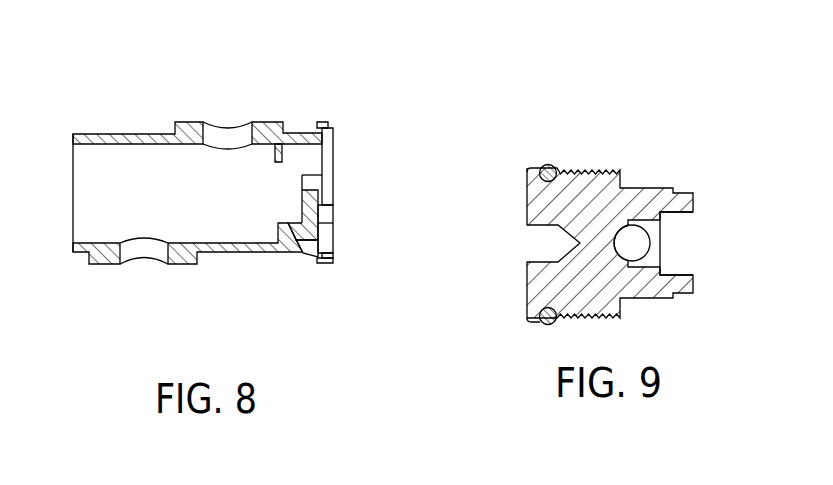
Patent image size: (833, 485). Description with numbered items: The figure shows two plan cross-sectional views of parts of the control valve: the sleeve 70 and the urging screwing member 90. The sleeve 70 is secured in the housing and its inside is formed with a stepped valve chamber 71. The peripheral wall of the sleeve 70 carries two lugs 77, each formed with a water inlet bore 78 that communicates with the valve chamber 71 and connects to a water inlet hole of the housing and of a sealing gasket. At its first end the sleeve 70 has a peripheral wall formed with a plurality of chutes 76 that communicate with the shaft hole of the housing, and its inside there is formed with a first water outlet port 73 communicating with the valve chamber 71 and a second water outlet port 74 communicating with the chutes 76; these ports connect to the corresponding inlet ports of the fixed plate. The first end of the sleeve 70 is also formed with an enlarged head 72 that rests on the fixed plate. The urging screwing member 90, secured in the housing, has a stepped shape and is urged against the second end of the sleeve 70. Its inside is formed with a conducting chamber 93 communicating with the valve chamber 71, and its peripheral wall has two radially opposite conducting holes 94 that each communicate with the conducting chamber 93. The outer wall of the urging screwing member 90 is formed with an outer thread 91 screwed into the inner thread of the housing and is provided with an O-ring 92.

In FIG. 8, the sleeve 70 is at (250, 208).
In FIG. 8, the valve chamber 71 is at (137, 155).
In FIG. 8, the enlarged head 72 is at (323, 262).
In FIG. 8, the first water outlet port 73 is at (317, 163).
In FIG. 8, the second water outlet port 74 is at (327, 237).
In FIG. 8, the chutes 76 is at (303, 250).
In FIG. 8, the lugs 77 is at (182, 264).
In FIG. 8, the water inlet bore 78 is at (135, 254).
In FIG. 9, the urging screwing member 90 is at (663, 185).
In FIG. 9, the outer thread 91 is at (589, 165).
In FIG. 9, the O-ring 92 is at (546, 166).
In FIG. 9, the conducting chamber 93 is at (685, 257).
In FIG. 9, the conducting holes 94 is at (636, 243).